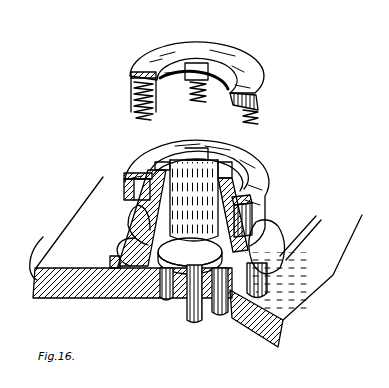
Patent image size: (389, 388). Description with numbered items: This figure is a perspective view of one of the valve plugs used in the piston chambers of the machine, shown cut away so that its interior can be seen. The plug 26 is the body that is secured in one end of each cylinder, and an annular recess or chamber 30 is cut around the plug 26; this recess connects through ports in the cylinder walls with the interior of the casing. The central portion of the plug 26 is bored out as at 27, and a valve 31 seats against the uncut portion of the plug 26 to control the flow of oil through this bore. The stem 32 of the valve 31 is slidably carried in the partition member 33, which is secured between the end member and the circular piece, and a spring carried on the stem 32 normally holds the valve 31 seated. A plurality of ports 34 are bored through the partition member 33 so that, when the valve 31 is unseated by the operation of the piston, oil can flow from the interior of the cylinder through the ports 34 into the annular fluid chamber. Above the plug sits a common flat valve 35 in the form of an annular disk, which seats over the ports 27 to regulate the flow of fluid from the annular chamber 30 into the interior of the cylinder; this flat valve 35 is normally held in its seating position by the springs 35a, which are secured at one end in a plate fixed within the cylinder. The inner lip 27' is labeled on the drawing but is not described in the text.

The springs 35a is at (236, 60).
The flat valve 35 is at (244, 162).
The bore 27 is at (194, 194).
The inner lip 27' is at (200, 195).
The valve 31 is at (190, 256).
The annular recess 30 is at (137, 223).
The partition member 33 is at (70, 245).
The plug 26 is at (262, 221).
The ports 34 is at (166, 298).
The stem 32 is at (193, 324).